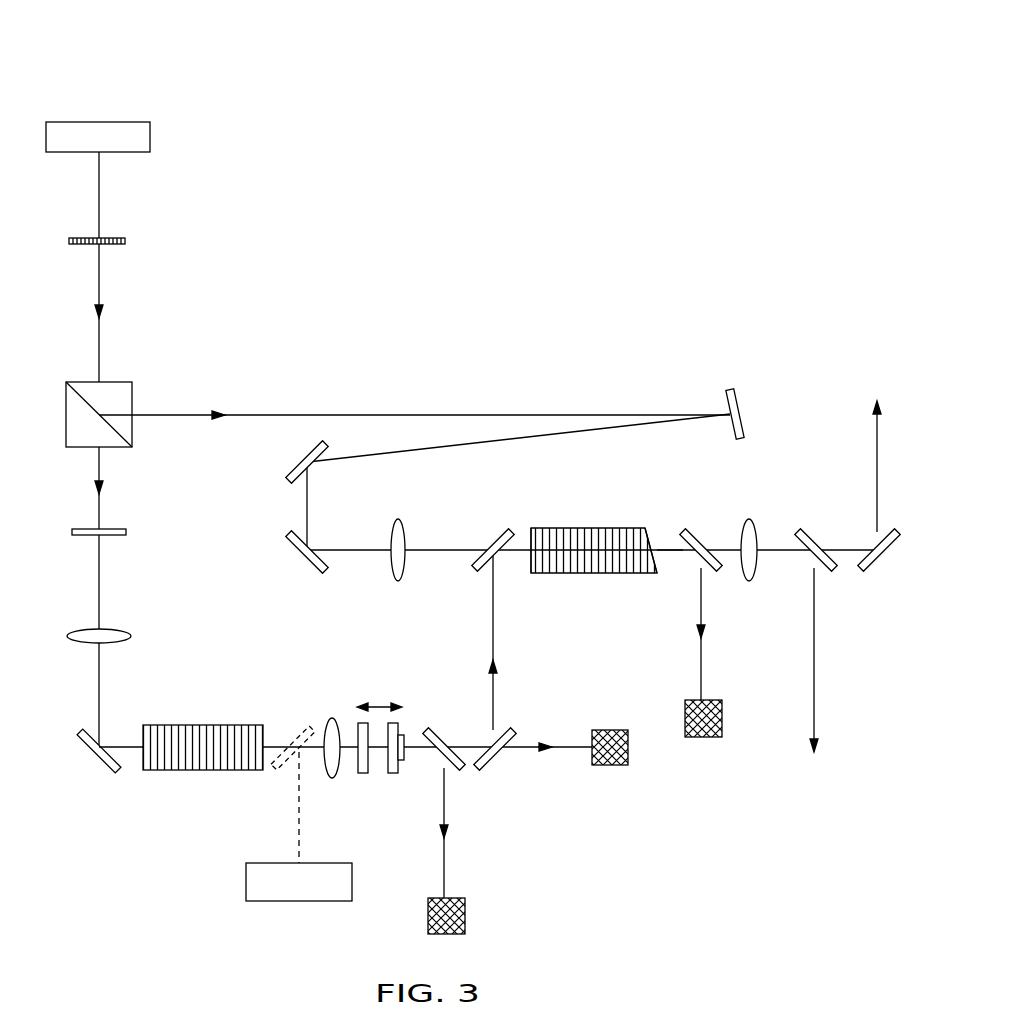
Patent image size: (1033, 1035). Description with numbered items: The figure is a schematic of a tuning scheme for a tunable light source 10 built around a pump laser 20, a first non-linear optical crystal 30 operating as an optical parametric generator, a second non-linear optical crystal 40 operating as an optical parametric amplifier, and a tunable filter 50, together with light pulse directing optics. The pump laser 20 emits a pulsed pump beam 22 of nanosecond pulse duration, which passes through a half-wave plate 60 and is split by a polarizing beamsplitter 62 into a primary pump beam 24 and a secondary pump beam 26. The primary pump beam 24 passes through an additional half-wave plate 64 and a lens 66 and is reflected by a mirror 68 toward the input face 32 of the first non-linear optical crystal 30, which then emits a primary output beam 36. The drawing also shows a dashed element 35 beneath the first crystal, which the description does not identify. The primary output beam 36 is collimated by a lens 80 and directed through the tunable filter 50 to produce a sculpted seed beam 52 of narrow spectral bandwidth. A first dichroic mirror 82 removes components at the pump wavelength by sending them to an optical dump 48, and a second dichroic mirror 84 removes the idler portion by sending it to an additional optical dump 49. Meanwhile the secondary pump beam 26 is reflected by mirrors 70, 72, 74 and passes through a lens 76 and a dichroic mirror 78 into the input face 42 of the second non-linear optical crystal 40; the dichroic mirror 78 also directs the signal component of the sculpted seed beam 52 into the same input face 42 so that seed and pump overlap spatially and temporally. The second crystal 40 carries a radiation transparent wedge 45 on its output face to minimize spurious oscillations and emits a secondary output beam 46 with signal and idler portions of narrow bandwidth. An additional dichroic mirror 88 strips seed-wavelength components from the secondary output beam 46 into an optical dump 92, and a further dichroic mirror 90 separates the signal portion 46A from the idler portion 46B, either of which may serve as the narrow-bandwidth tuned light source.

The tunable light source 10 is at (636, 88).
The pump laser 20 is at (55, 122).
The pulsed pump beam 22 is at (99, 196).
The primary pump beam 24 is at (99, 457).
The secondary pump beam 26 is at (155, 414).
The first non-linear optical crystal 30 is at (228, 767).
The input face 32 is at (145, 770).
The wavelength controller 35 is at (312, 902).
The primary output beam 36 is at (298, 750).
The second non-linear optical crystal 40 is at (585, 558).
The input face 42 is at (528, 567).
The radiation transparent wedge 45 is at (647, 572).
The secondary output beam 46 is at (677, 552).
The signal portion 46A is at (813, 675).
The idler portion 46B is at (877, 438).
The optical dump 48 is at (467, 915).
The additional optical dump 49 is at (630, 752).
The tunable filter 50 is at (344, 682).
The sculpted seed beam 52 is at (494, 687).
The half-wave plate 60 is at (125, 241).
The polarizing beamsplitter 62 is at (75, 382).
The additional half-wave plate 64 is at (80, 530).
The lens 66 is at (133, 633).
The mirror 68 is at (88, 746).
The mirror 70 is at (747, 402).
The mirror 72 is at (292, 460).
The mirror 74 is at (292, 552).
The lens 76 is at (400, 517).
The dichroic mirror 78 is at (492, 532).
The lens 80 is at (330, 720).
The first dichroic mirror 82 is at (439, 728).
The second dichroic mirror 84 is at (495, 766).
The additional dichroic mirror 88 is at (697, 532).
The further dichroic mirror 90 is at (810, 532).
The optical dump 92 is at (723, 710).